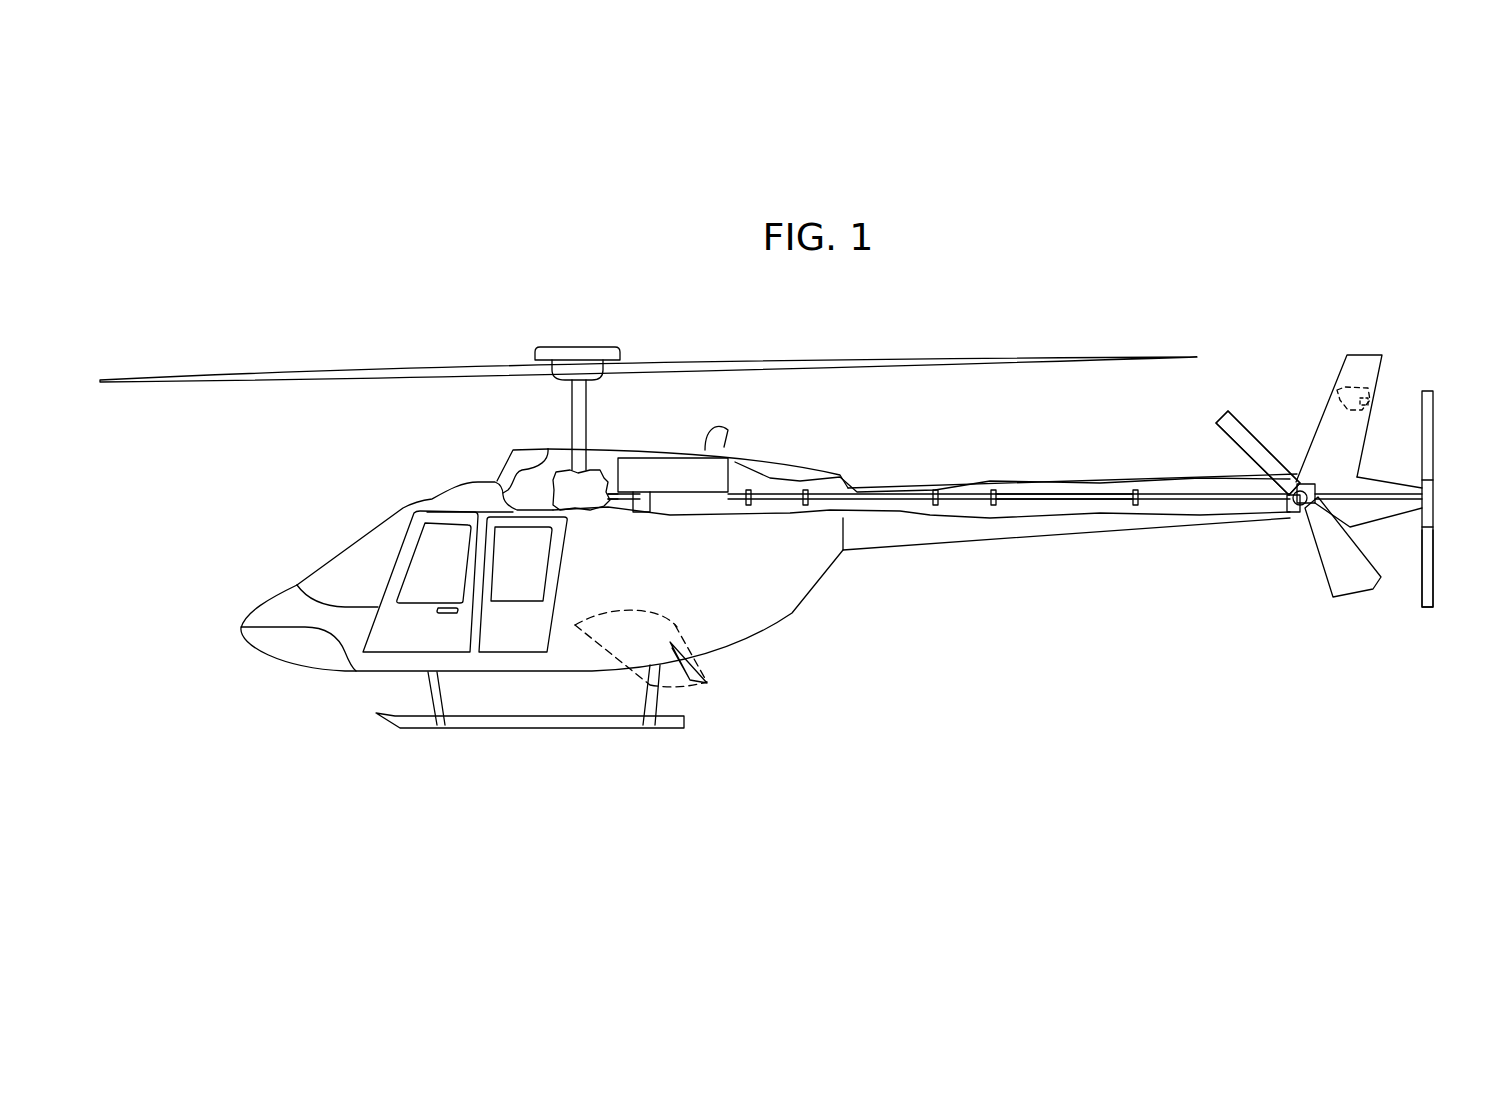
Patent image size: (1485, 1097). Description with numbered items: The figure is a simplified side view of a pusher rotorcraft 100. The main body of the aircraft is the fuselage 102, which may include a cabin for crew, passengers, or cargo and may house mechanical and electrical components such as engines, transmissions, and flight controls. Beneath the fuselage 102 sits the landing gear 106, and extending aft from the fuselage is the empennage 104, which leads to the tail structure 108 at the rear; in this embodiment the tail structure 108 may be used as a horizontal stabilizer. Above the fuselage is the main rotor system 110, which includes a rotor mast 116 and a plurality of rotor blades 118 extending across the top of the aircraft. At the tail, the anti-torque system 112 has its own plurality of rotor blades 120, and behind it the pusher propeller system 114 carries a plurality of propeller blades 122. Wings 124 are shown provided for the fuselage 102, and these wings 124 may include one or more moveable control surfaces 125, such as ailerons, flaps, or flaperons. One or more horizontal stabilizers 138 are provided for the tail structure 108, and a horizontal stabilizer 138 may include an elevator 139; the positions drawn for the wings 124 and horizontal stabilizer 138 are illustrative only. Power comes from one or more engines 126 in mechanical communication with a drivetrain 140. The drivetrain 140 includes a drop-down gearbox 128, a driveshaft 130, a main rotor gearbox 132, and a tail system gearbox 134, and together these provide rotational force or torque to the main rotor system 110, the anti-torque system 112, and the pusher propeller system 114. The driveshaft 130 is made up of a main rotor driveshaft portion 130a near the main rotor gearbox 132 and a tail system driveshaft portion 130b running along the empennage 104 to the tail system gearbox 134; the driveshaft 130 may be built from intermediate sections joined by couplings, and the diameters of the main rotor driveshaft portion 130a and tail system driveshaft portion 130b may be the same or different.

The pusher rotorcraft 100 is at (447, 303).
The fuselage 102 is at (318, 667).
The empennage 104 is at (970, 543).
The landing gear 106 is at (420, 728).
The tail structure 108 is at (1435, 285).
The main rotor system 110 is at (606, 330).
The anti-torque system 112 is at (1278, 540).
The pusher propeller system 114 is at (1449, 590).
The rotor mast 116 is at (572, 422).
The rotor blades 118 is at (957, 358).
The rotor blades 120 is at (1234, 446).
The propeller blades 122 is at (1437, 400).
The wings 124 is at (670, 622).
The moveable control surfaces 125 is at (710, 663).
The engine 126 is at (728, 462).
The drop-down gearbox 128 is at (644, 494).
The driveshaft 130 is at (855, 480).
The main rotor driveshaft portion 130a is at (617, 508).
The tail system driveshaft portion 130b is at (1067, 493).
The main rotor gearbox 132 is at (545, 491).
The tail system gearbox 134 is at (1308, 483).
The horizontal stabilizer 138 is at (1353, 387).
The elevator 139 is at (1373, 400).
The drivetrain 140 is at (790, 478).